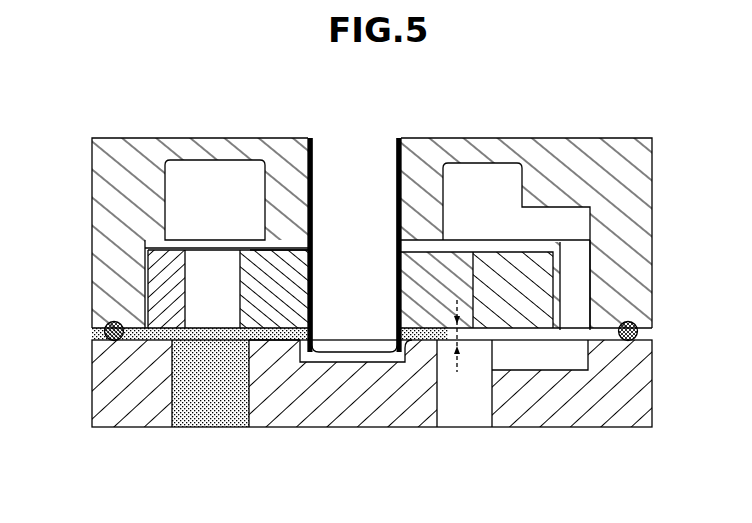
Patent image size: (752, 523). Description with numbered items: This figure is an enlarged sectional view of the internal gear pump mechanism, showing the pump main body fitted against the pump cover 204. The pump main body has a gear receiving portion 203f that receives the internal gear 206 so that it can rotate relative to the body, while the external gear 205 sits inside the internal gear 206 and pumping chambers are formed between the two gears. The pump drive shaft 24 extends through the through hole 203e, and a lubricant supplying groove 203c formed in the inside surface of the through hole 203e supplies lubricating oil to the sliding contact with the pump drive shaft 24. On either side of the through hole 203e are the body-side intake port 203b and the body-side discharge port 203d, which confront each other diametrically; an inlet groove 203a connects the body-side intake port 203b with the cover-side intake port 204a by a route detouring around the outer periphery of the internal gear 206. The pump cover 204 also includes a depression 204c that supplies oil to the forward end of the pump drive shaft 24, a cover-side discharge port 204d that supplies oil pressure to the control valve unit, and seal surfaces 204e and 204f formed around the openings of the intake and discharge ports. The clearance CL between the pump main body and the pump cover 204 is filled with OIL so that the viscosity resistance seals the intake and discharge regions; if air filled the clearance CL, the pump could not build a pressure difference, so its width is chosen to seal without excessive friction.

The inlet groove 203a is at (588, 274).
The body-side intake port 203b is at (480, 168).
The lubricant supplying groove 203c is at (432, 242).
The body-side discharge port 203d is at (172, 176).
The through hole 203e is at (330, 168).
The gear receiving portion 203f is at (150, 283).
The pump cover 204 is at (624, 388).
The cover-side intake port 204a is at (480, 406).
The depression 204c is at (362, 363).
The cover-side discharge port 204d is at (230, 395).
The seal surface 204e is at (419, 392).
The seal surface 204f is at (285, 344).
The external gear 205 is at (257, 250).
The internal gear 206 is at (507, 240).
The pump drive shaft 24 is at (350, 333).
The oil film OIL is at (128, 345).
The clearance CL is at (452, 349).